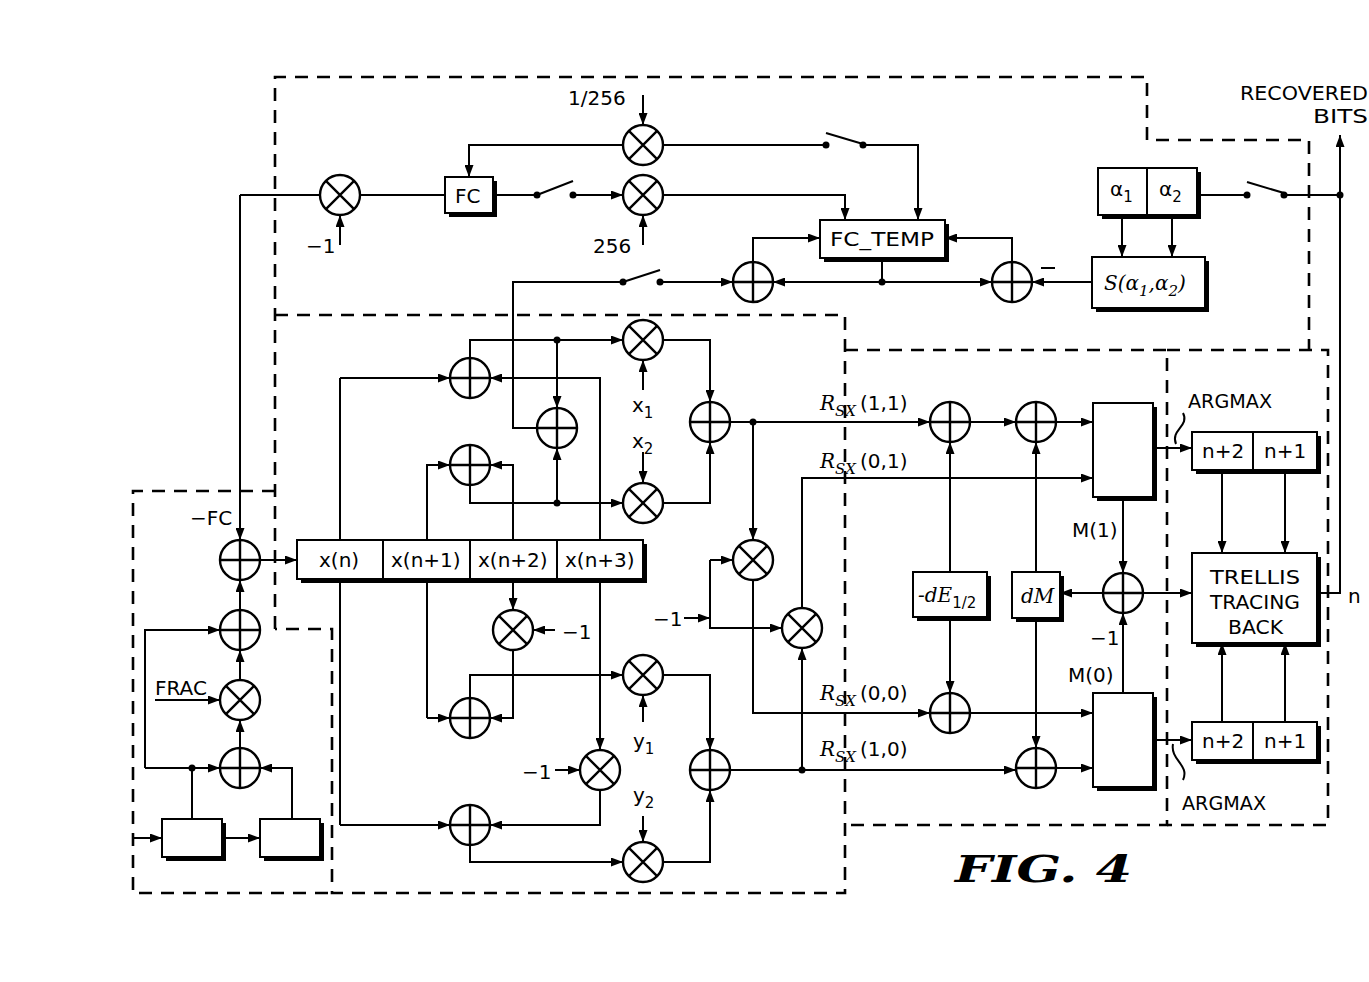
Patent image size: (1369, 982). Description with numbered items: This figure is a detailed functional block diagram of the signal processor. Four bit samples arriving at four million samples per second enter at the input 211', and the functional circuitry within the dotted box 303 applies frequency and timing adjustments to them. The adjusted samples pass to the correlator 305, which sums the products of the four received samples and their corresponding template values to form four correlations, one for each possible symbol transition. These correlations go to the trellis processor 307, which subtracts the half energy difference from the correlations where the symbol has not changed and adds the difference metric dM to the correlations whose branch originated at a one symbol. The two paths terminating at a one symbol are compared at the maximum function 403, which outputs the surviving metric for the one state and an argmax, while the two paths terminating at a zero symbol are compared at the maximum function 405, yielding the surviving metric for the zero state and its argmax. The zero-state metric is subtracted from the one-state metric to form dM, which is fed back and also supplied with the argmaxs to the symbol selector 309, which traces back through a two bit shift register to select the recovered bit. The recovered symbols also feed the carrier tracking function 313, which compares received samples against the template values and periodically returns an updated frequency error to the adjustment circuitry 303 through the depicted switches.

The carrier tracking function 313 is at (275, 121).
The correlator 305 is at (408, 315).
The frequency and timing adjustment circuitry 303 is at (175, 491).
The trellis processor 307 is at (933, 350).
The symbol selector 309 is at (1265, 350).
The maximum function for paths terminating at a one symbol 403 is at (1128, 396).
The maximum function for paths terminating at a zero symbol 405 is at (1093, 786).
The input 211' is at (228, 853).